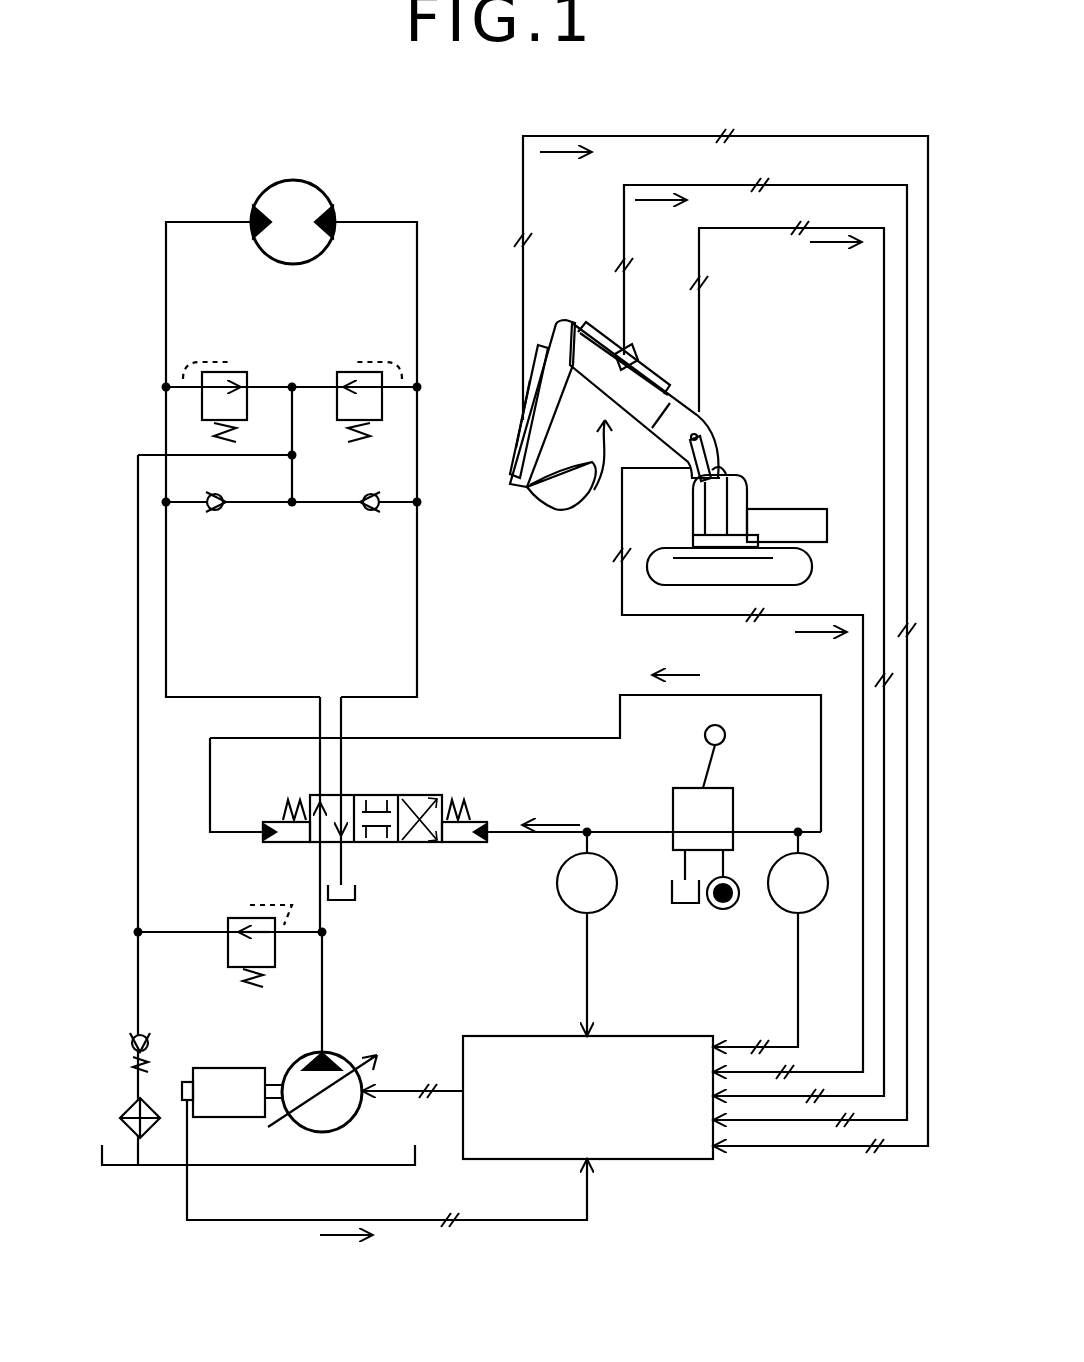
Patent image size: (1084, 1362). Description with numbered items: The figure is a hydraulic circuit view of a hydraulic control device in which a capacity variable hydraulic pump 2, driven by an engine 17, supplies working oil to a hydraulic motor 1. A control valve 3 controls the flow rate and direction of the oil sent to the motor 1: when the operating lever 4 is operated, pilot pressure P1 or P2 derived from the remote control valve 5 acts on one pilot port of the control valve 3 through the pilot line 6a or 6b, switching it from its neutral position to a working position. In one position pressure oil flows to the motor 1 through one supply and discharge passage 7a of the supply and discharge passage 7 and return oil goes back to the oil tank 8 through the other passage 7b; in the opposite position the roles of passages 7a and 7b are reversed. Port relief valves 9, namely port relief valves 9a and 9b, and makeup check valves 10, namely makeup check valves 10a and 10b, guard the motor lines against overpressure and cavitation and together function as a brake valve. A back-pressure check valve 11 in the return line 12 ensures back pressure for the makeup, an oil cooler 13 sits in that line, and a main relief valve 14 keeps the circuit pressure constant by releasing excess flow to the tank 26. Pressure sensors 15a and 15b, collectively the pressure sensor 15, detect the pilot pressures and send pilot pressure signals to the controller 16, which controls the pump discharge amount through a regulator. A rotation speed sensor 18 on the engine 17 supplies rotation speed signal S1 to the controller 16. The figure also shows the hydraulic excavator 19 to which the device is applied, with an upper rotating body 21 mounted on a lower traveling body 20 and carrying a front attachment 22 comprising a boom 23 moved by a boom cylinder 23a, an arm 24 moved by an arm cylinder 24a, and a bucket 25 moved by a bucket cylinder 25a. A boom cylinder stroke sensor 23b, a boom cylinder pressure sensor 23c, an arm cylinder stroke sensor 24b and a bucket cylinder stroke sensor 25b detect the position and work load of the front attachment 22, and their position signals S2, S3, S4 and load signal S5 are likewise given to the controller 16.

The hydraulic motor 1 is at (293, 180).
The capacity variable hydraulic pump 2 is at (340, 1060).
The control valve 3 is at (416, 843).
The operating lever 4 is at (727, 762).
The remote control valve 5 is at (735, 810).
The pilot line 6a is at (550, 737).
The pilot line 6b is at (520, 835).
The supply and discharge passage 7 is at (403, 628).
The supply and discharge passage 7a is at (268, 697).
The supply and discharge passage 7b is at (393, 697).
The oil tank 8 is at (347, 902).
The port relief valves 9 is at (346, 300).
The port relief valve 9a is at (226, 370).
The port relief valve 9b is at (358, 370).
The makeup check valves 10 is at (337, 567).
The makeup check valve 10a is at (222, 512).
The makeup check valve 10b is at (362, 512).
The back-pressure check valve 11 is at (130, 1032).
The return line 12 is at (138, 885).
The oil cooler 13 is at (125, 1110).
The main relief valve 14 is at (235, 918).
The pressure sensor 15 is at (760, 980).
The pressure sensor 15a is at (774, 908).
The pressure sensor 15b is at (612, 908).
The controller 16 is at (660, 1160).
The engine 17 is at (240, 1068).
The rotation speed sensor 18 is at (186, 1082).
The hydraulic excavator 19 is at (838, 451).
The lower traveling body 20 is at (810, 570).
The upper rotating body 21 is at (827, 527).
The front attachment 22 is at (592, 483).
The boom 23 is at (650, 390).
The boom cylinder 23a is at (695, 432).
The boom cylinder stroke sensor 23b is at (715, 470).
The boom cylinder pressure sensor 23c is at (692, 488).
The arm 24 is at (558, 355).
The arm cylinder 24a is at (596, 333).
The arm cylinder stroke sensor 24b is at (634, 352).
The bucket 25 is at (546, 507).
The bucket cylinder 25a is at (525, 408).
The bucket cylinder stroke sensor 25b is at (517, 445).
The tank 26 is at (160, 1165).
The rotation speed signal S1 is at (346, 1258).
The position signal S2 is at (791, 662).
The position signal S3 is at (765, 652).
The position signal S4 is at (721, 641).
The load signal S5 is at (738, 773).
The pilot pressure P1 is at (697, 679).
The pilot pressure P2 is at (552, 804).